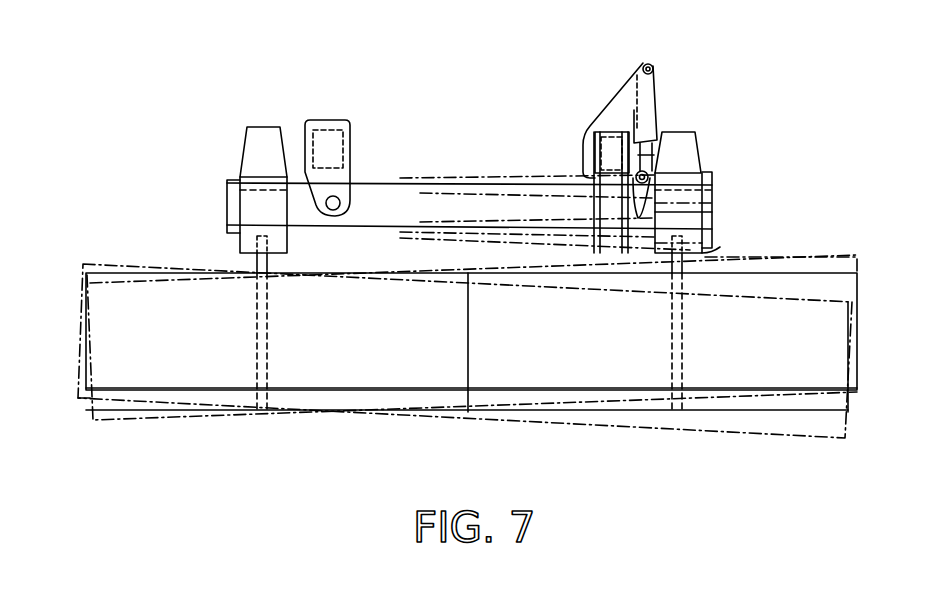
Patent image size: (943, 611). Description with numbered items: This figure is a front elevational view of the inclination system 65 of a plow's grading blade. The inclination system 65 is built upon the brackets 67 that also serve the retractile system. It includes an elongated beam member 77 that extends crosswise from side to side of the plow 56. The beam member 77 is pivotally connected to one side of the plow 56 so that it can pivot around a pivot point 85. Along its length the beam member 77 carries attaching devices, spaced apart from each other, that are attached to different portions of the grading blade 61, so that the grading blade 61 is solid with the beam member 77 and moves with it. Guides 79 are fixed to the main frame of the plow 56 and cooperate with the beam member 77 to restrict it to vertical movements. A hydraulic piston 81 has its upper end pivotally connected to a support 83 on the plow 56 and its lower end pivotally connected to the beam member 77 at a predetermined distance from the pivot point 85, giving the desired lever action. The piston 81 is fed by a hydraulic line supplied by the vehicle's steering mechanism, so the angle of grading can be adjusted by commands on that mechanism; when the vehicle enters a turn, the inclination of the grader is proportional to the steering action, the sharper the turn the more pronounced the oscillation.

The plow 56 is at (332, 142).
The grading blade 61 is at (838, 346).
The inclination system 65 is at (503, 140).
The brackets 67 is at (705, 256).
The beam member 77 is at (412, 200).
The guides 79 is at (626, 244).
The hydraulic piston 81 is at (655, 112).
The support 83 is at (618, 106).
The pivot point 85 is at (335, 212).